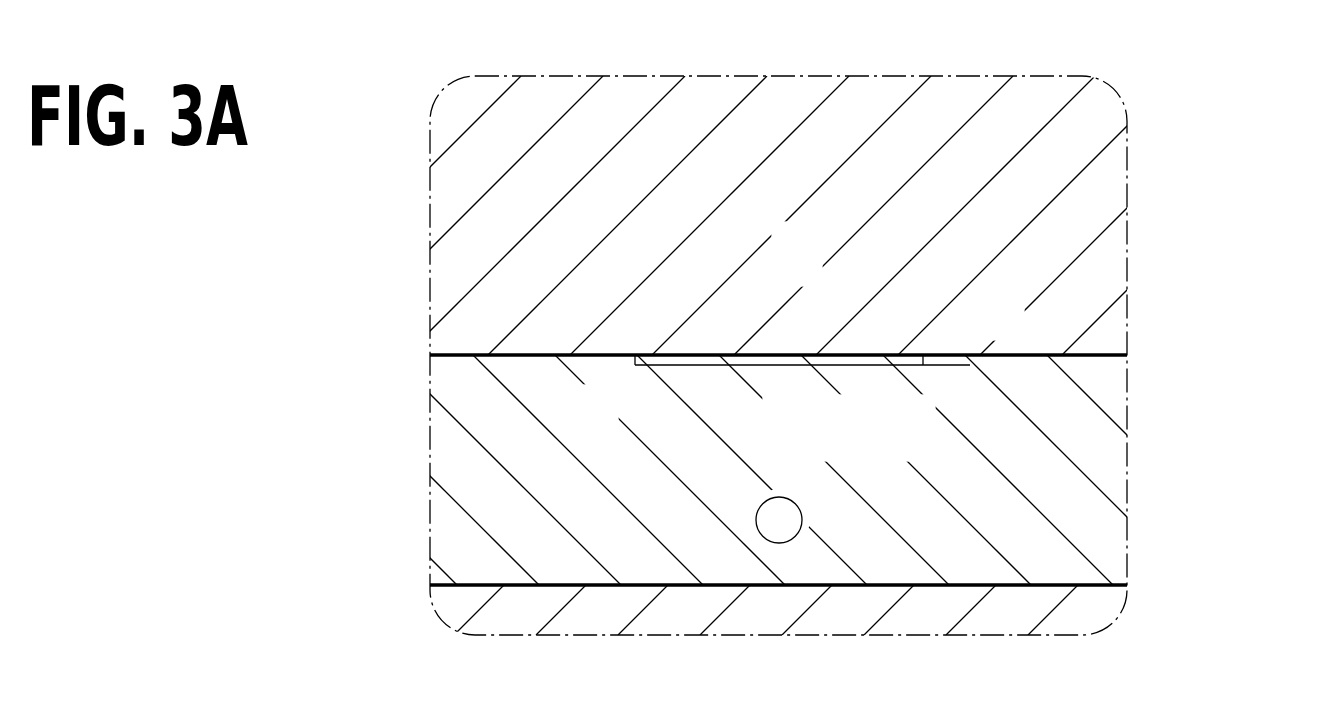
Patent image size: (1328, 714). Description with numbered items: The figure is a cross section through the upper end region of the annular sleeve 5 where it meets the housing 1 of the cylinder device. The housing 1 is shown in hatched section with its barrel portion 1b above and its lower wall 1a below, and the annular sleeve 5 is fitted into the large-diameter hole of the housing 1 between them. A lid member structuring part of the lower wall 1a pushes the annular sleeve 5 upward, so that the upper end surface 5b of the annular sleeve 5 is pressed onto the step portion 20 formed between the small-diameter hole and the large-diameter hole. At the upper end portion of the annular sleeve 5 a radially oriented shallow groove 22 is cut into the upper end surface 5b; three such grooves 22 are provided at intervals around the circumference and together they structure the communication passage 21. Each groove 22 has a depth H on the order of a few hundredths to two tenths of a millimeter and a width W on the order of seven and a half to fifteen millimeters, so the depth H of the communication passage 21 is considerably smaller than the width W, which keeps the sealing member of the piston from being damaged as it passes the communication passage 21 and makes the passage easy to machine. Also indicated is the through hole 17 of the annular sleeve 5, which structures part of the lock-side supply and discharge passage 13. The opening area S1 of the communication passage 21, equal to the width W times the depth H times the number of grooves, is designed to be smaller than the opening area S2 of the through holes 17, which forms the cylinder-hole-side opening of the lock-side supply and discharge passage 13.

The housing 1 is at (778, 355).
The lower wall 1a is at (1082, 607).
The barrel portion 1b is at (1102, 255).
The annular sleeve 5 is at (1207, 543).
The upper end surface 5b is at (1047, 355).
The step portion 20 is at (1065, 358).
The groove 22 is at (802, 405).
The communication passage 21 is at (693, 365).
The through hole 17 is at (729, 605).
The lock-side supply and discharge passage 13 is at (778, 533).
The opening area of the communication passage S1 is at (672, 360).
The opening area of the through holes S2 is at (783, 508).
The width of the groove W is at (635, 365).
The depth of the groove H is at (969, 447).